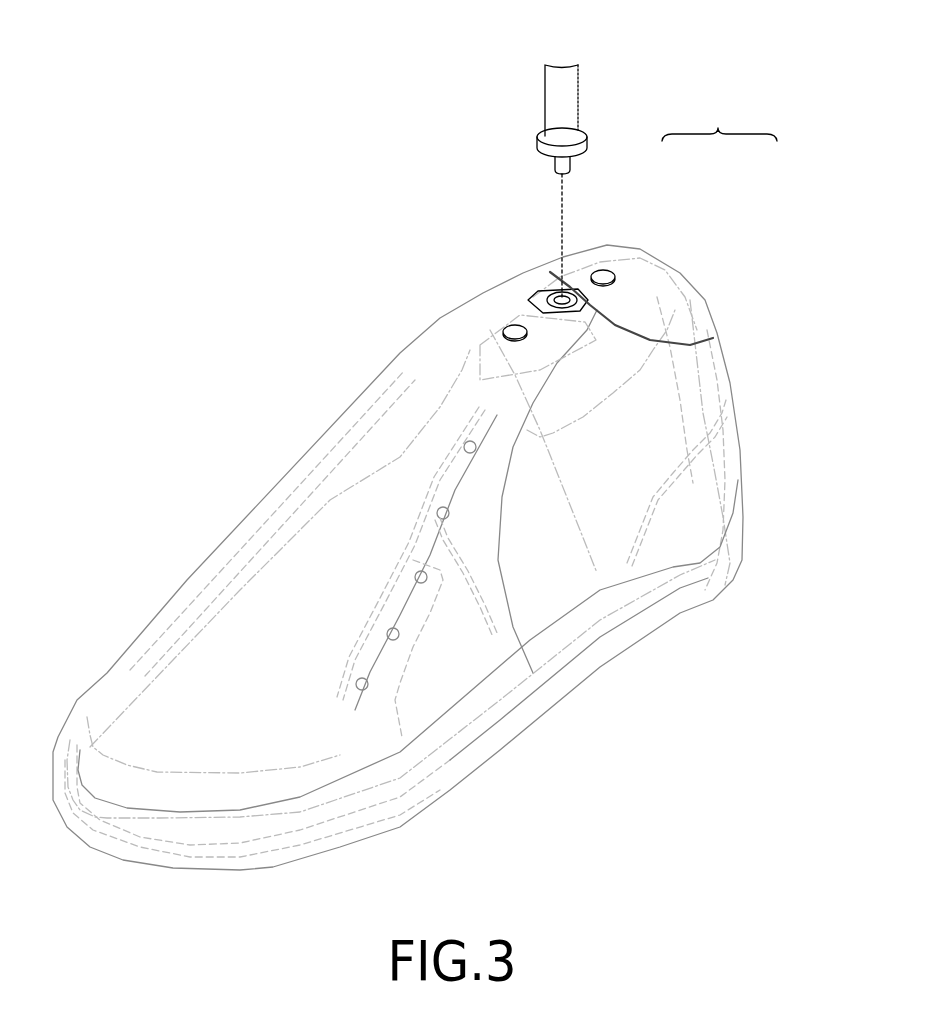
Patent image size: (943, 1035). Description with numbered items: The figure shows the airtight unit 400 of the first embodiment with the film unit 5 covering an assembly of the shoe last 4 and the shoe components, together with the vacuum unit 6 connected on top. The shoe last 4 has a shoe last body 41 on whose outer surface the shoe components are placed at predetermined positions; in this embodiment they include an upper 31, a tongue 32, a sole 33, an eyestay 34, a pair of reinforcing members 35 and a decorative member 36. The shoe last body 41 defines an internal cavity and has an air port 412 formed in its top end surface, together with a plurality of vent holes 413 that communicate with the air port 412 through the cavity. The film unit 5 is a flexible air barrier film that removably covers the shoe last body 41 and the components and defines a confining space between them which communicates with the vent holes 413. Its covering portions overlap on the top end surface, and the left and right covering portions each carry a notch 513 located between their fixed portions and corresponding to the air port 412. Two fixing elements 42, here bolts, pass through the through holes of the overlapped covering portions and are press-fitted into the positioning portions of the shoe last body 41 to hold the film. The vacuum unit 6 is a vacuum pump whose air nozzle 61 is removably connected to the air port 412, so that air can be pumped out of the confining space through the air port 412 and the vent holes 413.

The shoe last 4 is at (679, 273).
The film unit 5 is at (657, 230).
The vacuum unit 6 is at (524, 83).
The air nozzle 61 is at (555, 165).
The airtight unit 400 is at (719, 116).
The shoe last body 41 is at (620, 377).
The fixing elements 42 is at (607, 272).
The air port 412 is at (557, 293).
The vent holes 413 is at (332, 577).
The notch 513 is at (583, 310).
The upper 31 is at (450, 650).
The tongue 32 is at (435, 372).
The sole 33 is at (628, 640).
The eyestay 34 is at (360, 743).
The reinforcing members 35 is at (557, 587).
The decorative member 36 is at (667, 533).